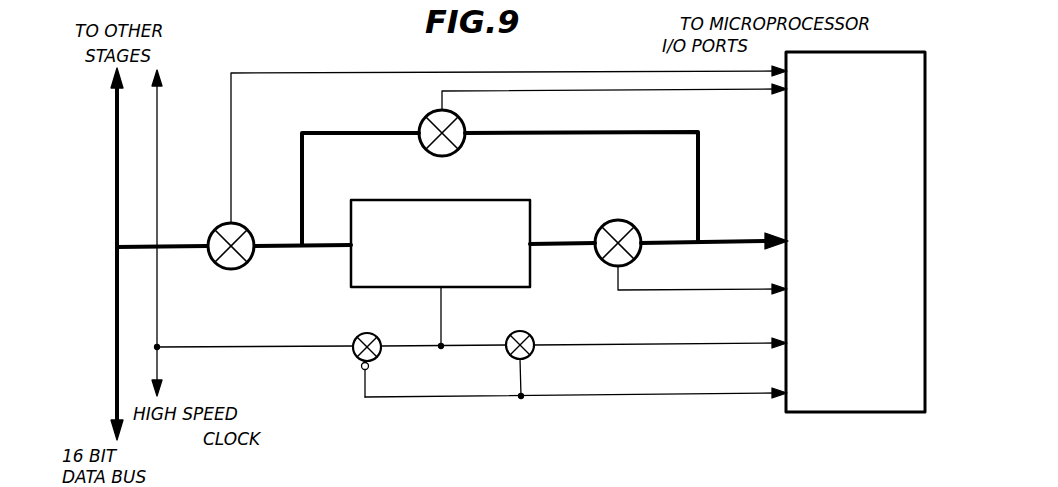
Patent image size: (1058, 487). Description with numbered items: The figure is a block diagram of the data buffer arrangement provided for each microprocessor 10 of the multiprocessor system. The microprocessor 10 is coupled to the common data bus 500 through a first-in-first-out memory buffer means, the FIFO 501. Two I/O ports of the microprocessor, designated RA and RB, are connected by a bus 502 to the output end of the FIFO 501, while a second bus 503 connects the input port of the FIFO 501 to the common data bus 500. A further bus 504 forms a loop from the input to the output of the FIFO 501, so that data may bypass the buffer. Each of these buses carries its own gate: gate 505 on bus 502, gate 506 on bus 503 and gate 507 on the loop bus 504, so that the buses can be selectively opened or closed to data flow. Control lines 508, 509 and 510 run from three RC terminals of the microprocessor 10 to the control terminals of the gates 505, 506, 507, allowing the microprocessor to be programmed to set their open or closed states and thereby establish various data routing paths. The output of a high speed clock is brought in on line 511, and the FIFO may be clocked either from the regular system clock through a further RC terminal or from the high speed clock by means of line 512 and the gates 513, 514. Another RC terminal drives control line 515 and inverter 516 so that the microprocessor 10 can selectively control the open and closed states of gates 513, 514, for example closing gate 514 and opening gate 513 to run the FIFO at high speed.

The microprocessor 10 is at (822, 432).
The common data bus 500 is at (113, 132).
The first-in-first-out memory buffer means (FIFO) 501 is at (447, 200).
The bus 502 is at (658, 248).
The second bus 503 is at (282, 250).
The bus 504 is at (583, 135).
The gate 505 is at (626, 220).
The gate 506 is at (215, 232).
The gate 507 is at (421, 150).
The control line 508 is at (267, 76).
The control line 509 is at (533, 92).
The control line 510 is at (651, 294).
The line 511 is at (160, 138).
The line 512 is at (444, 310).
The gate 513 is at (533, 335).
The gate 514 is at (381, 320).
The control line 515 is at (580, 398).
The inverter 516 is at (370, 369).